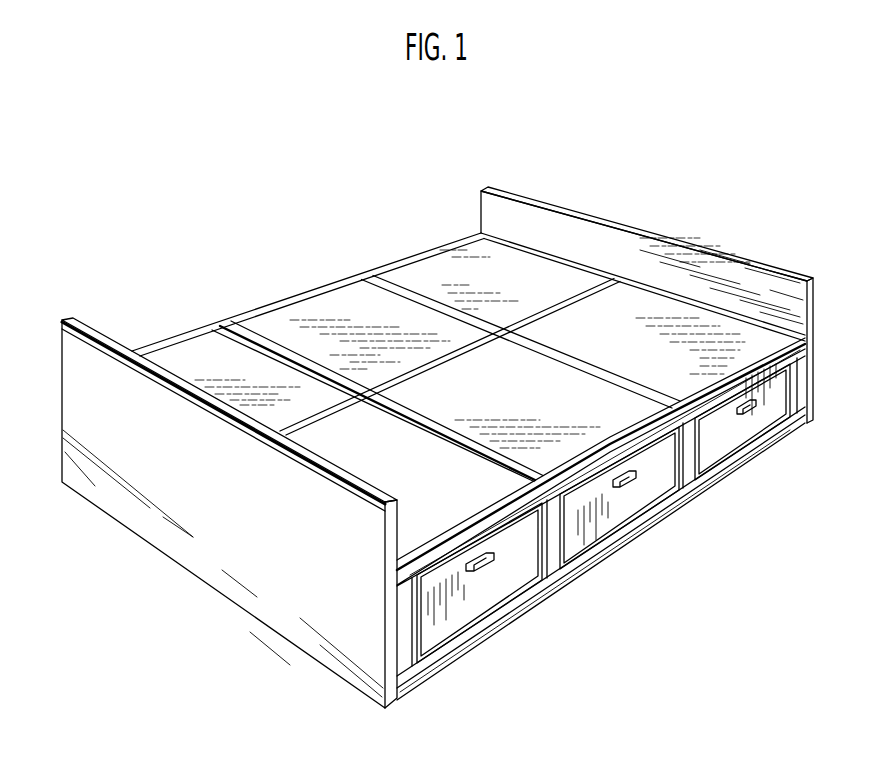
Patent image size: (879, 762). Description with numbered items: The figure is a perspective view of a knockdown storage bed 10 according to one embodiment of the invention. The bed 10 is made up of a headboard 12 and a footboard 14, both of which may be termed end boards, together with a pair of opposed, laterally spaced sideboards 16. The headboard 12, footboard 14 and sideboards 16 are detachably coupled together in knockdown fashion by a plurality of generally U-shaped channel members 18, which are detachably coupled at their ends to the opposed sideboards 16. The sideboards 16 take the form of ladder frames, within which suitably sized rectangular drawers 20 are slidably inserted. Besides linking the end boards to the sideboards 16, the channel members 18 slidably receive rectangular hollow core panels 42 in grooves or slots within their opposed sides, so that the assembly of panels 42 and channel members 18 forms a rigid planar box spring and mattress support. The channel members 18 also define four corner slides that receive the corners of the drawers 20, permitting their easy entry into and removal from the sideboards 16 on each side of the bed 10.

The knockdown bed 10 is at (638, 222).
The headboard 12 is at (273, 582).
The footboard 14 is at (815, 314).
The sideboards 16 is at (273, 302).
The channel members 18 is at (318, 374).
The drawers 20 is at (517, 568).
The hollow core panels 42 is at (542, 415).